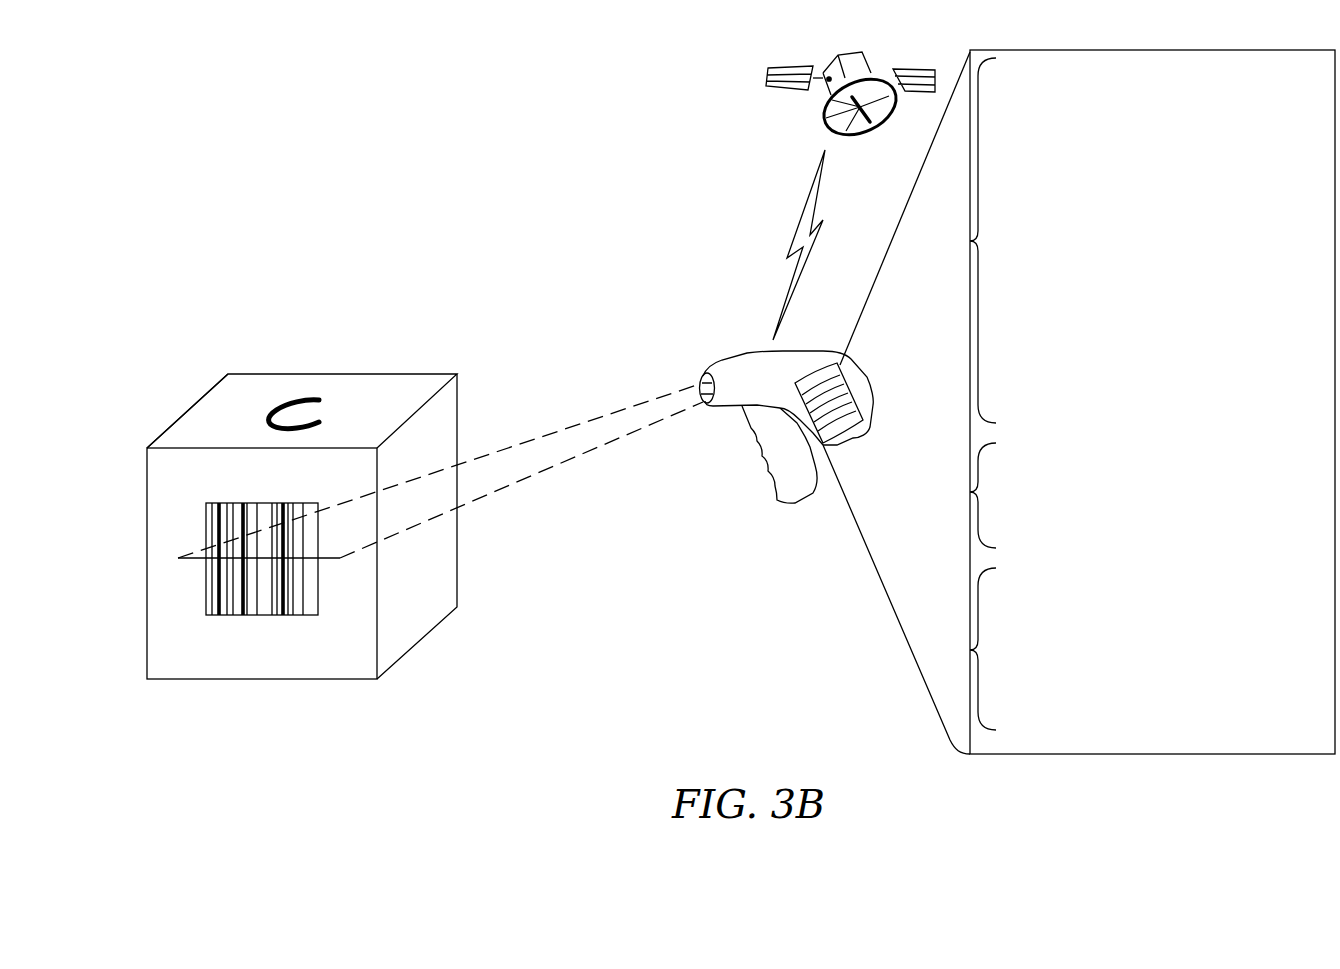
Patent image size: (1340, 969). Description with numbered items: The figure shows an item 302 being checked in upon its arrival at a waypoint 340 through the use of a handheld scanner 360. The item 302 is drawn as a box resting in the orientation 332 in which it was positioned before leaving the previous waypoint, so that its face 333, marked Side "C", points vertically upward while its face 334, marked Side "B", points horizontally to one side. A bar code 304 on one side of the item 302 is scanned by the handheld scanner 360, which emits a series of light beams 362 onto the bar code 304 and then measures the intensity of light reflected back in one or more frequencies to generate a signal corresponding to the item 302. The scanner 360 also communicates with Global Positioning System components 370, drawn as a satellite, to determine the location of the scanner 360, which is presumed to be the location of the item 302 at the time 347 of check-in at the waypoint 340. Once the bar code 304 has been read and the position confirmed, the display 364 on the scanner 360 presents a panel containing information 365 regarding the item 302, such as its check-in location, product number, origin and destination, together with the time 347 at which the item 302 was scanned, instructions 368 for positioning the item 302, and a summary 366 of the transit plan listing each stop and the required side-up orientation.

The item 302 is at (306, 318).
The waypoint 340 is at (197, 355).
The orientation 332 is at (189, 408).
The face (Side "C") 333 is at (172, 434).
The face (Side "B") 334 is at (412, 640).
The bar code 304 is at (215, 590).
The light beams 362 is at (616, 437).
The handheld scanner 360 is at (768, 496).
The display 364 is at (818, 372).
The Global Positioning System (GPS) components 370 is at (785, 93).
The time 347 is at (1233, 58).
The information 365 is at (971, 241).
The instructions 368 is at (971, 492).
The summary 366 is at (971, 650).